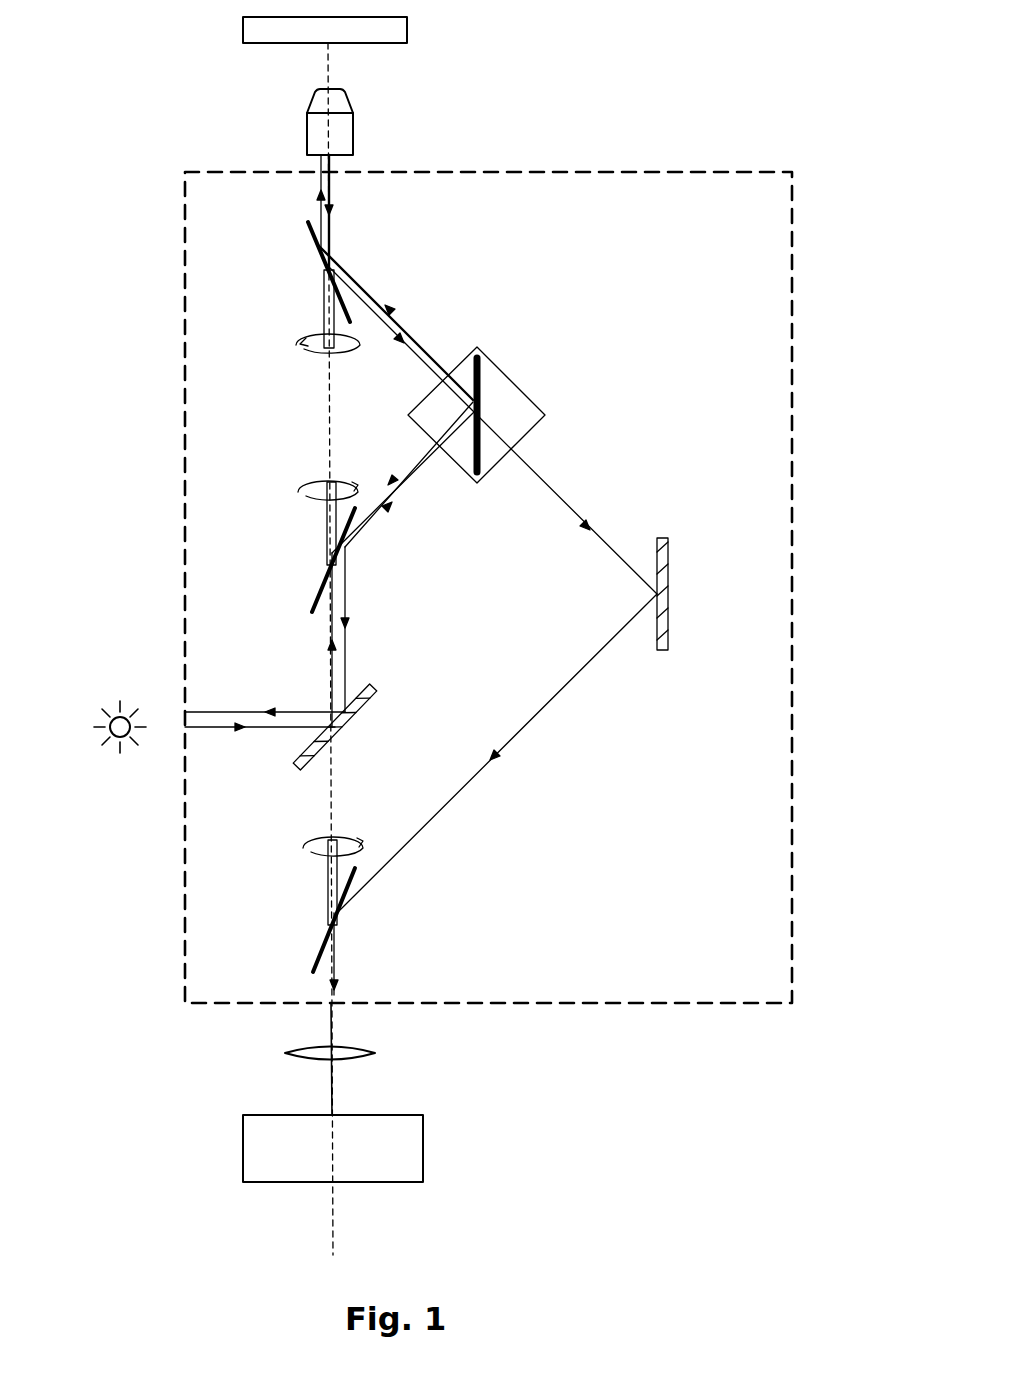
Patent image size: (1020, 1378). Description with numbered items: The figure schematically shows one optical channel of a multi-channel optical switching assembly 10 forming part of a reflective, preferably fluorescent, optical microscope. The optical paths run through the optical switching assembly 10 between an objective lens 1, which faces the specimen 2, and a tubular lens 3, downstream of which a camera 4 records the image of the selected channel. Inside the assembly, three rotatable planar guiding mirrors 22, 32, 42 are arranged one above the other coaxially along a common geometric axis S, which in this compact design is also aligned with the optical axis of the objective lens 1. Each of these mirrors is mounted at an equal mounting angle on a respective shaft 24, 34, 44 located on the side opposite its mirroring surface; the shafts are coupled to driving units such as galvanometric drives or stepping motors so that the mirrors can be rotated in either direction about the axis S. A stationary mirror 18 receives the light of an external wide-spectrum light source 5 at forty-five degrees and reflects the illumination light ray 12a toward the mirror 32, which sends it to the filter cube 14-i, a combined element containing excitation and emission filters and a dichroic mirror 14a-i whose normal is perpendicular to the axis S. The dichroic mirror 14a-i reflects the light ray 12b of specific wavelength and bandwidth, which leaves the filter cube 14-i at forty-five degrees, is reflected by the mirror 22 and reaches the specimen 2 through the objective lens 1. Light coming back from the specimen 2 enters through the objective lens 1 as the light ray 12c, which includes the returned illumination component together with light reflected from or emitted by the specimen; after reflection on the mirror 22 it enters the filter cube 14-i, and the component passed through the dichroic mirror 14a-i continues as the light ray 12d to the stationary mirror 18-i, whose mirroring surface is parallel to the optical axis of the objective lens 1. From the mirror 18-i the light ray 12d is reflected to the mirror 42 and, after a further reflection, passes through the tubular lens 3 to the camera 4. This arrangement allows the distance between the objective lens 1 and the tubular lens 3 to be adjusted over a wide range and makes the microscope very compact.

The objective lens 1 is at (355, 140).
The specimen 2 is at (408, 28).
The tubular lens 3 is at (368, 1050).
The camera 4 is at (426, 1140).
The light source 5 is at (118, 700).
The optical switching assembly 10 is at (720, 172).
The light ray 12a is at (216, 735).
The light ray 12b is at (314, 217).
The light ray 12c is at (338, 222).
The light ray 12d is at (582, 508).
The filter cube 14-i is at (546, 405).
The dichroic mirror 14a-i is at (480, 378).
The mirror 18 is at (358, 718).
The mirror 18-i is at (670, 572).
The mirror 22 is at (304, 232).
The shaft 24 is at (322, 302).
The mirror 32 is at (310, 596).
The shaft 34 is at (326, 534).
The mirror 42 is at (314, 936).
The shaft 44 is at (328, 876).
The common geometric axis S is at (338, 78).